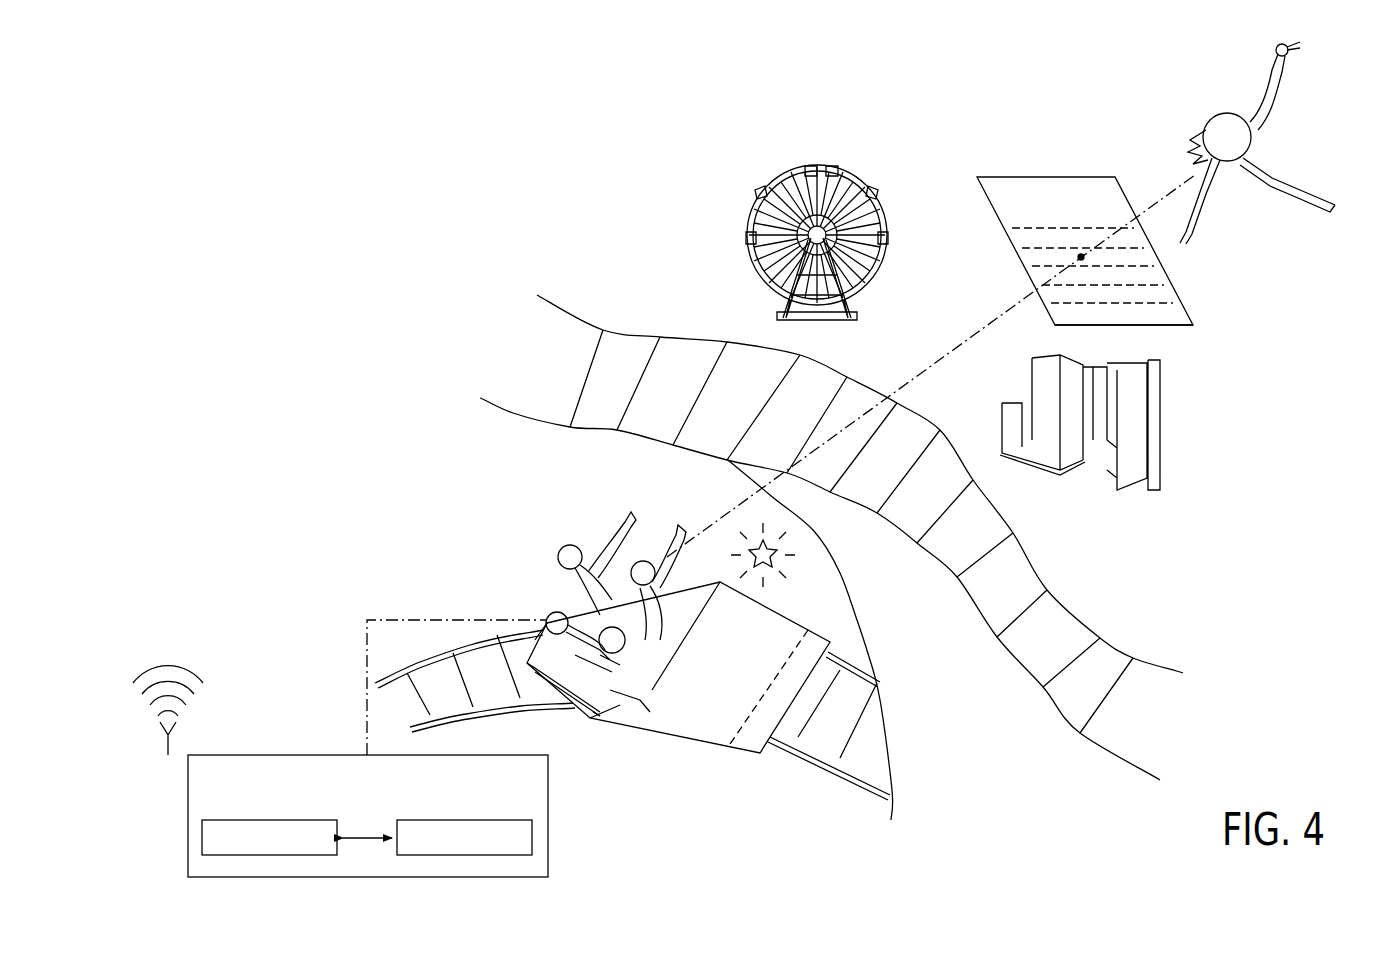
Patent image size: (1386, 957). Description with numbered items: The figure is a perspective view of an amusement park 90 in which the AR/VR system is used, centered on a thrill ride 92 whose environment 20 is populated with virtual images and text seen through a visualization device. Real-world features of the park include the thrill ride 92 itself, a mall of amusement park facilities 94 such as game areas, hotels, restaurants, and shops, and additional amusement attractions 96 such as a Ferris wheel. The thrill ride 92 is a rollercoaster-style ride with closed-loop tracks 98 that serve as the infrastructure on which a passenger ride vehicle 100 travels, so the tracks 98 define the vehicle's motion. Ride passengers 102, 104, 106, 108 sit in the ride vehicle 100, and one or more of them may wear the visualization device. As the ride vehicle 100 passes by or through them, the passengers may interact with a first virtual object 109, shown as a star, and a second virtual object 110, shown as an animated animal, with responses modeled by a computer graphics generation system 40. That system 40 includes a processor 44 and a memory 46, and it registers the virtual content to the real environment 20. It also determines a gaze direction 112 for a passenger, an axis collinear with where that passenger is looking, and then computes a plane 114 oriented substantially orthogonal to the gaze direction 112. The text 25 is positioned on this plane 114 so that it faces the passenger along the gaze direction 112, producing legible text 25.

The environment 20 is at (333, 175).
The text 25 is at (1020, 208).
The computer graphics generation system 40 is at (324, 755).
The processor 44 is at (202, 838).
The memory 46 is at (532, 838).
The amusement park 90 is at (1343, 382).
The thrill ride 92 is at (440, 478).
The mall of amusement park facilities 94 is at (1002, 423).
The additional amusement attractions 96 is at (832, 166).
The tracks 98 is at (700, 335).
The passenger ride vehicle 100 is at (706, 695).
The ride passenger 102 is at (565, 545).
The ride passenger 104 is at (657, 540).
The ride passenger 106 is at (545, 617).
The ride passenger 108 is at (635, 700).
The first virtual object 109 is at (785, 562).
The second virtual object 110 is at (1270, 92).
The gaze direction 112 is at (958, 335).
The plane 114 is at (1130, 328).